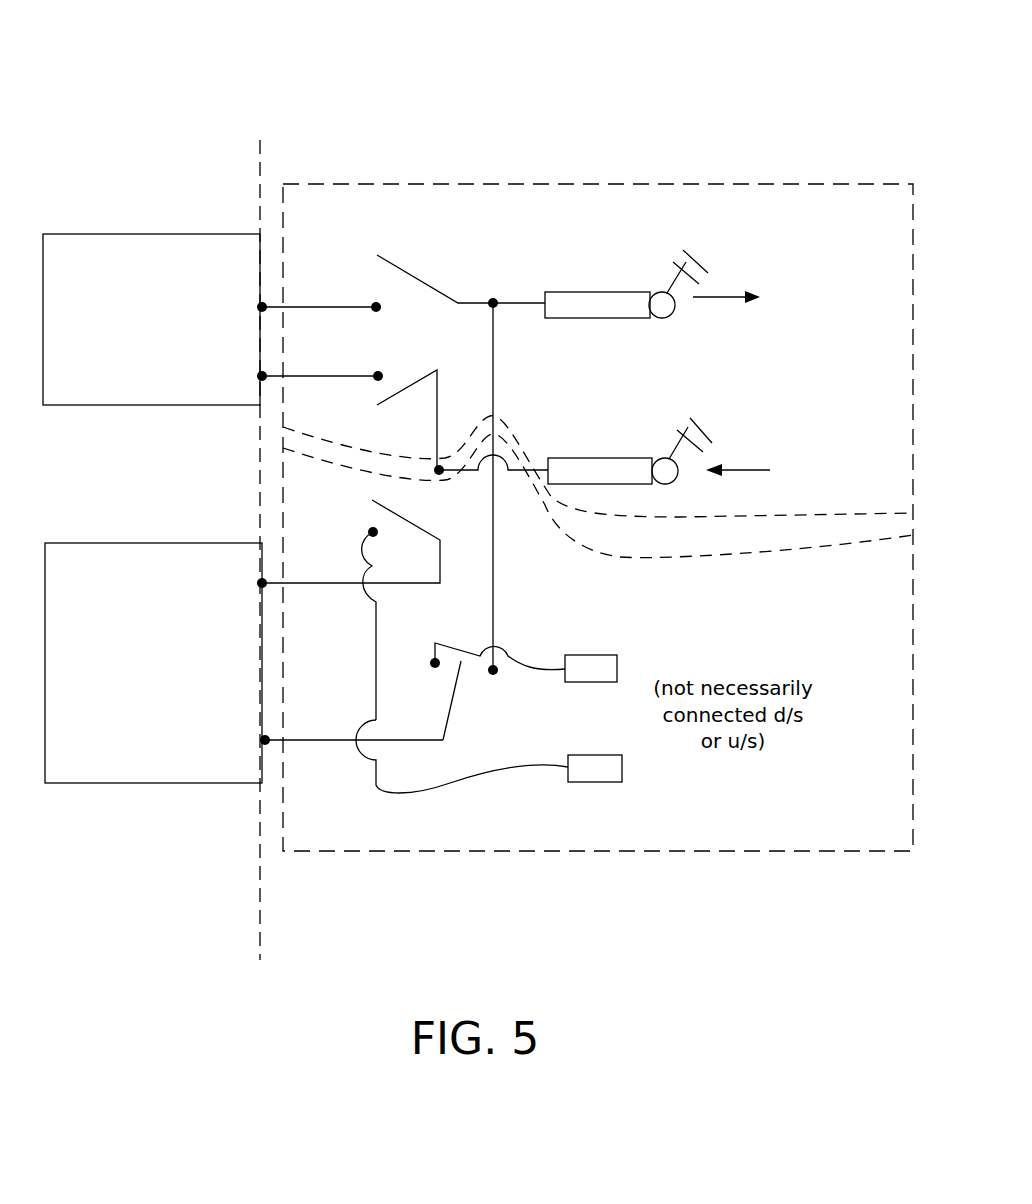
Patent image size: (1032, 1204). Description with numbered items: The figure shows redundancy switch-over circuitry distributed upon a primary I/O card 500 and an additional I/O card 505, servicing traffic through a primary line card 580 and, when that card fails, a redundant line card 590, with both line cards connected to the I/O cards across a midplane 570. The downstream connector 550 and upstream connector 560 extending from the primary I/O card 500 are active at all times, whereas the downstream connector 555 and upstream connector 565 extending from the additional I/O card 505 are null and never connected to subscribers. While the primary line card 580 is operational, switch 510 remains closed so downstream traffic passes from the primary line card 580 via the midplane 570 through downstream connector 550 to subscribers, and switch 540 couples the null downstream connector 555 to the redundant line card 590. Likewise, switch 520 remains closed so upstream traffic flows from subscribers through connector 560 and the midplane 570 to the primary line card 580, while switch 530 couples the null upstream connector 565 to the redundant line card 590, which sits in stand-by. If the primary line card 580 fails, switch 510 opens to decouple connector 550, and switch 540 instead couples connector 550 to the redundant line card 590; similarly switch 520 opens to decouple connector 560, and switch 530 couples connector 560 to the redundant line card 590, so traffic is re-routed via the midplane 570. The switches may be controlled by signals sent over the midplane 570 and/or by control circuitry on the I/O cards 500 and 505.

The primary I/O card 500 is at (598, 517).
The additional I/O card 505 is at (598, 524).
The switch 510 is at (420, 304).
The switch 520 is at (404, 378).
The switch 530 is at (405, 528).
The switch 540 is at (432, 700).
The downstream connector 550 is at (651, 291).
The null downstream connector 555 is at (531, 680).
The upstream connector 560 is at (632, 461).
The null upstream connector 565 is at (491, 766).
The midplane 570 is at (260, 118).
The primary line card 580 is at (151, 319).
The redundant line card 590 is at (153, 663).